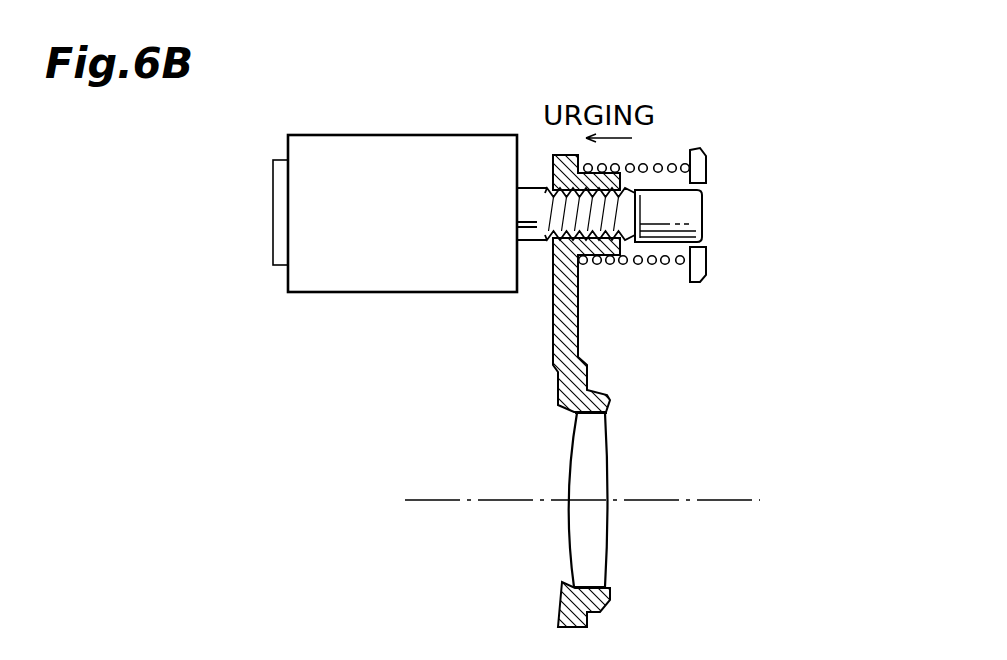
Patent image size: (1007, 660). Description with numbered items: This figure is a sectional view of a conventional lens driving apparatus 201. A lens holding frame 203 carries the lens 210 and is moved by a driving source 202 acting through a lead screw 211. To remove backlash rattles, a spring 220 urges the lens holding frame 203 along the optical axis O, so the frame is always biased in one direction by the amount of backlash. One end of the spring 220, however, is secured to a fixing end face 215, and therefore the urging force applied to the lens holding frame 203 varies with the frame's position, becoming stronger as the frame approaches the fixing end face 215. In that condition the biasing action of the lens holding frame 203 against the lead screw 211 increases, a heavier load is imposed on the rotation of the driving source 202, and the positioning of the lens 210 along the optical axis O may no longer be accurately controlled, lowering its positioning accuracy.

The lens driving apparatus 201 is at (778, 170).
The driving source 202 is at (438, 163).
The lens holding frame 203 is at (583, 393).
The lens 210 is at (595, 475).
The lead screw 211 is at (687, 213).
The fixing end face 215 is at (707, 283).
The spring 220 is at (660, 166).
The optical axis O is at (713, 502).